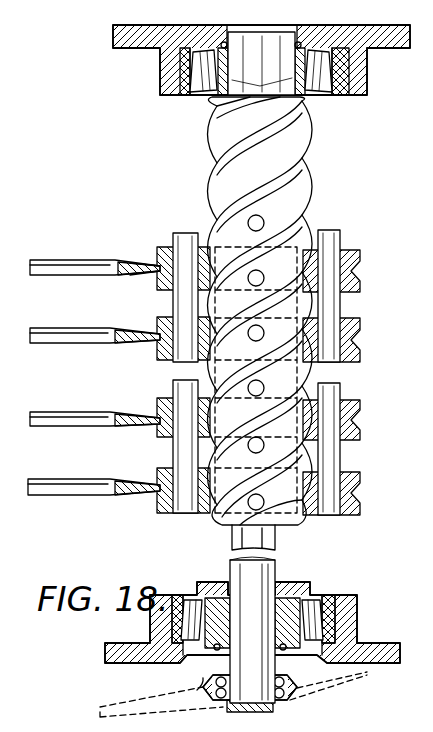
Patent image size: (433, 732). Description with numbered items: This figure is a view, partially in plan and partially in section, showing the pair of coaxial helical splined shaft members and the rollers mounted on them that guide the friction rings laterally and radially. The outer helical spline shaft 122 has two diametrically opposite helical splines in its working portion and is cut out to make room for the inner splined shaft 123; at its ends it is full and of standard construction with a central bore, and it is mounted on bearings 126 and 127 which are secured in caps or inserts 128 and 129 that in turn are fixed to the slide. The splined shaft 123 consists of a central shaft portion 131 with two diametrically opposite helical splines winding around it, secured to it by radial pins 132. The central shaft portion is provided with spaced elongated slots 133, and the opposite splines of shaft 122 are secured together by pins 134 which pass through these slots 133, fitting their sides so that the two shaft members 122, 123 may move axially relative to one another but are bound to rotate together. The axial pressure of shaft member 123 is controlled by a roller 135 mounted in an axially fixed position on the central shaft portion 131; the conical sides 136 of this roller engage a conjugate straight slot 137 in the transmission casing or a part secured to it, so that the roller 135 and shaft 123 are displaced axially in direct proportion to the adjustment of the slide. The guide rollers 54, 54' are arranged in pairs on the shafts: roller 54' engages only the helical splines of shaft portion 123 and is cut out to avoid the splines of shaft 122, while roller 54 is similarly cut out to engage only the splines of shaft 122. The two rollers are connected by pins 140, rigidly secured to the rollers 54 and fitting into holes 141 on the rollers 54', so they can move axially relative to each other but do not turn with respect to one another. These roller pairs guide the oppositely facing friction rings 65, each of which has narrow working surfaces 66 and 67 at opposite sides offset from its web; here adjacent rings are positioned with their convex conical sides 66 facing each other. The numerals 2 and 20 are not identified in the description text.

The machine 2 is at (392, 448).
The blade assembly 20 is at (170, 442).
The roller 54 is at (275, 416).
The roller 54' is at (278, 343).
The friction ring 65 is at (131, 268).
The working surface 66 is at (156, 272).
The working surface 67 is at (148, 262).
The helical spline shaft 122 is at (300, 125).
The splined shaft 123 is at (282, 183).
The bearing 126 is at (323, 88).
The bearing 127 is at (313, 602).
The cap or insert 128 is at (360, 75).
The cap or insert 129 is at (358, 602).
The central shaft portion 131 is at (267, 571).
The radial pin 132 is at (262, 446).
The elongated slot 133 is at (297, 382).
The pin 134 is at (258, 278).
The roller 135 is at (290, 699).
The conical side 136 is at (205, 689).
The straight slot 137 is at (331, 682).
The pin 140 is at (178, 352).
The hole 141 is at (185, 230).